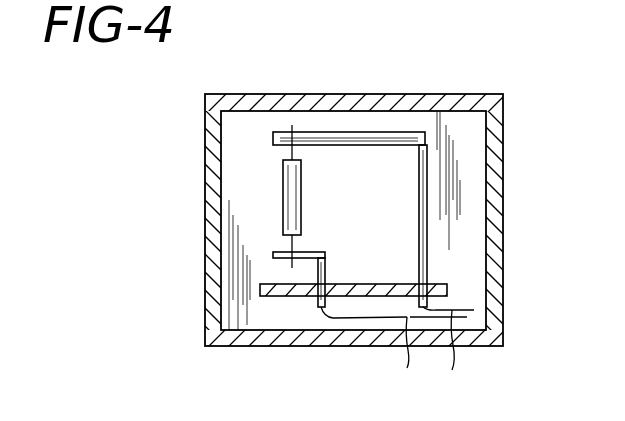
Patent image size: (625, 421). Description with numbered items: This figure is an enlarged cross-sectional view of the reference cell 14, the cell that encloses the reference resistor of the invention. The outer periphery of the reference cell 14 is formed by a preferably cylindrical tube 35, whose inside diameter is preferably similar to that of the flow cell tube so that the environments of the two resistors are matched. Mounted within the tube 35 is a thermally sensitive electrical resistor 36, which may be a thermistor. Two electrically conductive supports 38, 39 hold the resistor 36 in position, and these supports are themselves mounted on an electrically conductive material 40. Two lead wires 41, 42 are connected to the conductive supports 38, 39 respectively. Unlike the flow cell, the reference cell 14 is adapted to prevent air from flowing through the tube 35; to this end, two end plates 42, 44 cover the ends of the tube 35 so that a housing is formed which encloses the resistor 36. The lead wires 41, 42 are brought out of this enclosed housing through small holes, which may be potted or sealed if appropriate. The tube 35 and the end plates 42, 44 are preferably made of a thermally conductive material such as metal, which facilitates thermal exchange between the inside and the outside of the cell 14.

The reference cell 14 is at (426, 81).
The tube 35 is at (478, 93).
The thermally sensitive electrical resistor 36 is at (289, 190).
The electrically conductive support 38 is at (327, 265).
The electrically conductive support 39 is at (350, 131).
The electrically conductive material 40 is at (437, 284).
The lead wire 41 is at (377, 348).
The lead wire / end plate 42 is at (205, 193).
The end plate 44 is at (503, 207).